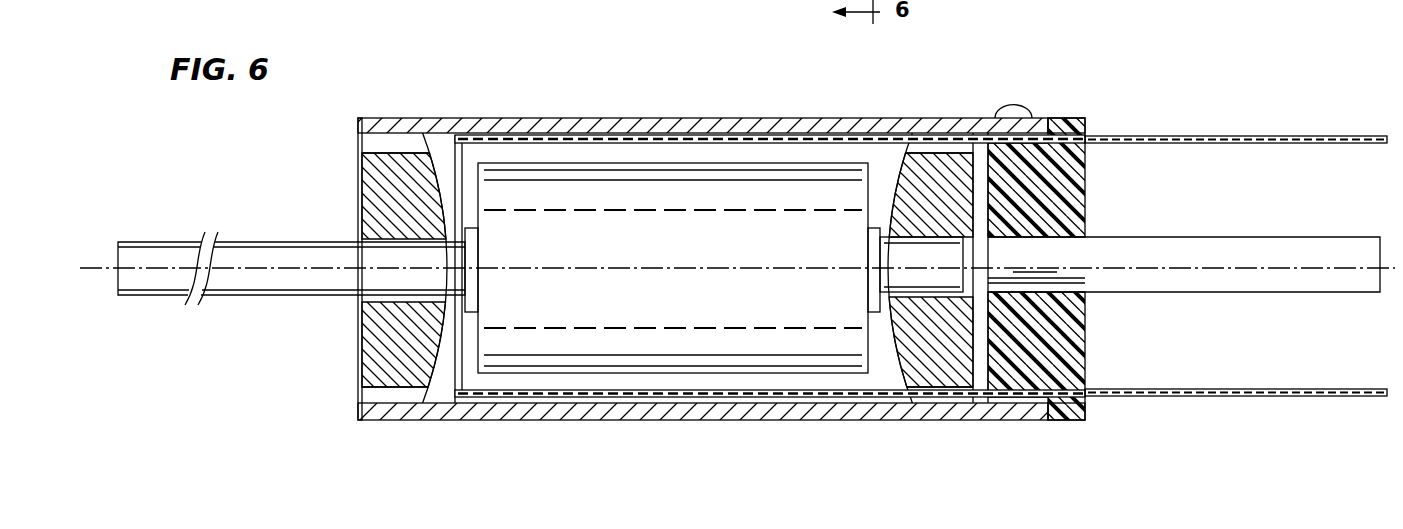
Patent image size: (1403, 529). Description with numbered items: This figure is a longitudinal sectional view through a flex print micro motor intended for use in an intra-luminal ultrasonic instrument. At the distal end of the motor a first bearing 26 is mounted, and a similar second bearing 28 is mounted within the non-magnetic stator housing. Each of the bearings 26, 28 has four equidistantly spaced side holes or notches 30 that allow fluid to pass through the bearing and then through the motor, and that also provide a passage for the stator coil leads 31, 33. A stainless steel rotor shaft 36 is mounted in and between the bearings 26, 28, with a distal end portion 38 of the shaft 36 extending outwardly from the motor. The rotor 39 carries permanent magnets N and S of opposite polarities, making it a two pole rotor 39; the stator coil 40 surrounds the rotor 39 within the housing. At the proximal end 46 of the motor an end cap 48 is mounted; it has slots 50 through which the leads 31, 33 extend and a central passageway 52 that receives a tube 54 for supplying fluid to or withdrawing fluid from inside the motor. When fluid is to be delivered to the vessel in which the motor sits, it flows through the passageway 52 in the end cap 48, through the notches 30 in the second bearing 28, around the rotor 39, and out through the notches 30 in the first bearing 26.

The first bearing 26 is at (373, 355).
The second bearing 28 is at (943, 190).
The side holes or notches 30 is at (377, 138).
The stator coil lead 31 is at (1262, 394).
The stator coil lead 33 is at (1293, 137).
The rotor shaft 36 is at (422, 265).
The distal end portion 38 is at (272, 257).
The rotor 39 is at (645, 253).
The stator winding 40 is at (718, 137).
The proximal end 46 is at (1045, 85).
The end cap 48 is at (1077, 213).
The slots 50 is at (1070, 150).
The central passageway 52 is at (1056, 239).
The tube 54 is at (1327, 237).